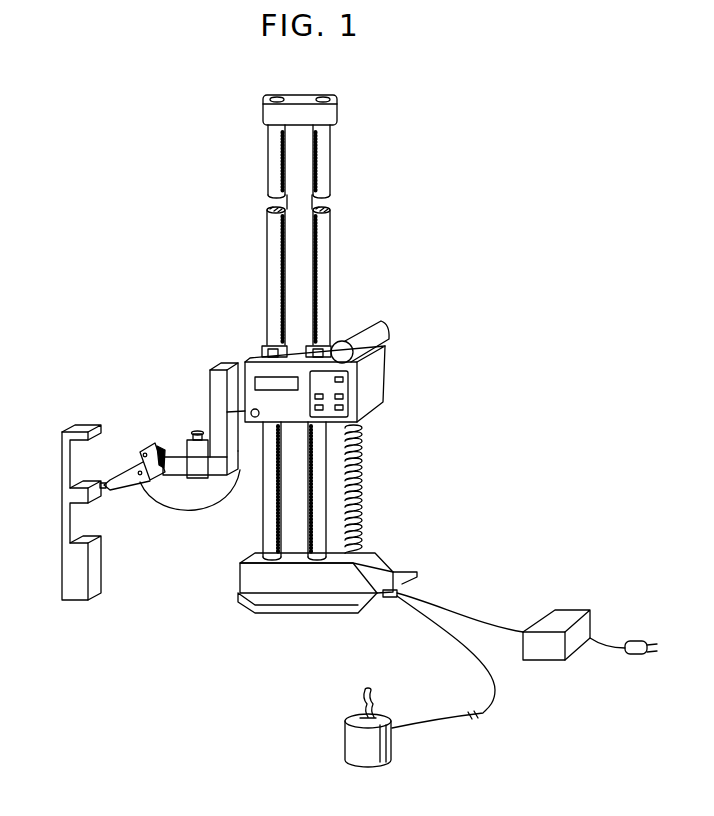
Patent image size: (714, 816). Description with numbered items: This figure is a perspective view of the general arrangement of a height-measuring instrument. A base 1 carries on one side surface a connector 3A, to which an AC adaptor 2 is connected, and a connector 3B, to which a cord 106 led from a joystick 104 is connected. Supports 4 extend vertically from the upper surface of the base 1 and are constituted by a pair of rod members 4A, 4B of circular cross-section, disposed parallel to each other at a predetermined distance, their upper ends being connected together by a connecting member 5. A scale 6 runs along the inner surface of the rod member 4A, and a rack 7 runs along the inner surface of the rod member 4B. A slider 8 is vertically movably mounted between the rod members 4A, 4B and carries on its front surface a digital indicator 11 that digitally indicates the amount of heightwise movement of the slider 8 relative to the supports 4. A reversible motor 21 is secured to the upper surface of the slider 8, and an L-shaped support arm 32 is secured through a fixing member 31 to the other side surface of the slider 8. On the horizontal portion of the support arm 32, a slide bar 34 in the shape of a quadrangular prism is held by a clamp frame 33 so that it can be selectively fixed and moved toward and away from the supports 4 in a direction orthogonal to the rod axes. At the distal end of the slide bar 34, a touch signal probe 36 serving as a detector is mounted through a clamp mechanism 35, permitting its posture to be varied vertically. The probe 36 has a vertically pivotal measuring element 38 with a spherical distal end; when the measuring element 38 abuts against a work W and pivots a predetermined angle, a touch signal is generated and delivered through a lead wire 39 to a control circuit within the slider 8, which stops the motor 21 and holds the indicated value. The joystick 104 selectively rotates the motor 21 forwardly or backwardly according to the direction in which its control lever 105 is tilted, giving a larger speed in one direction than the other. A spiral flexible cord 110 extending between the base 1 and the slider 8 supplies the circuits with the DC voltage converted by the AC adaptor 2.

The base 1 is at (240, 574).
The AC adaptor 2 is at (555, 625).
The connector 3A is at (407, 575).
The connector 3B is at (392, 598).
The supports 4 is at (258, 342).
The rod member 4A is at (270, 168).
The rod member 4B is at (313, 228).
The connecting member 5 is at (338, 105).
The scale 6 is at (287, 270).
The rack 7 is at (312, 258).
The slider 8 is at (385, 400).
The digital indicator 11 is at (262, 378).
The reversible motor 21 is at (387, 336).
The fixing member 31 is at (212, 368).
The support arm 32 is at (210, 385).
The clamp frame 33 is at (194, 442).
The slide bar 34 is at (232, 472).
The clamp mechanism 35 is at (150, 450).
The touch signal probe 36 is at (147, 486).
The measuring element 38 is at (108, 489).
The lead wire 39 is at (194, 508).
The joystick 104 is at (347, 747).
The control lever 105 is at (362, 692).
The cord 106 is at (487, 713).
The spiral flexible cord 110 is at (362, 490).
The work W is at (62, 440).